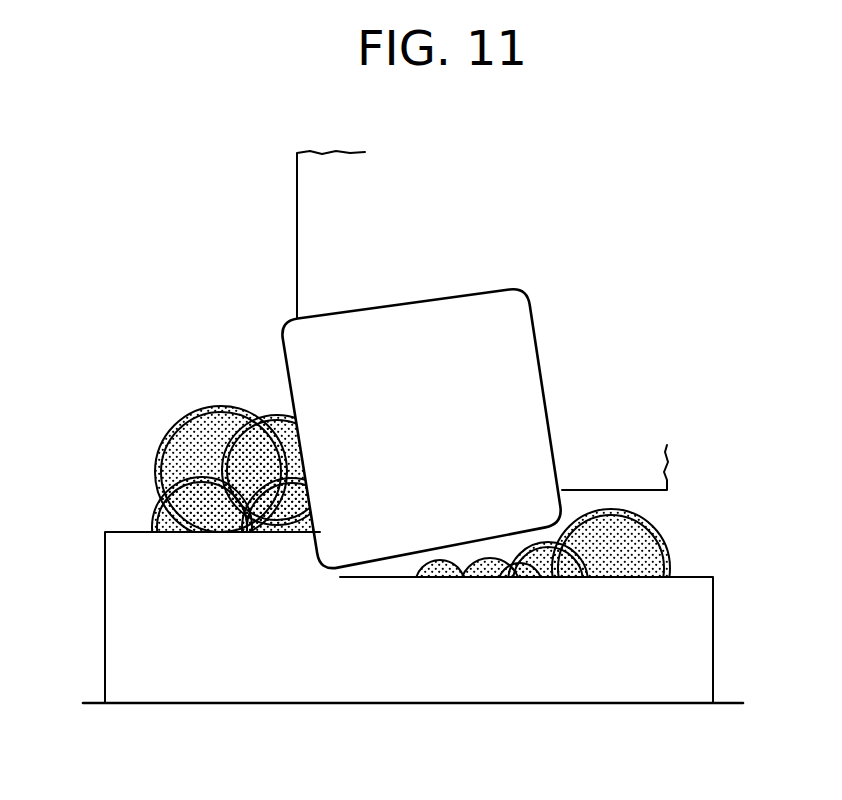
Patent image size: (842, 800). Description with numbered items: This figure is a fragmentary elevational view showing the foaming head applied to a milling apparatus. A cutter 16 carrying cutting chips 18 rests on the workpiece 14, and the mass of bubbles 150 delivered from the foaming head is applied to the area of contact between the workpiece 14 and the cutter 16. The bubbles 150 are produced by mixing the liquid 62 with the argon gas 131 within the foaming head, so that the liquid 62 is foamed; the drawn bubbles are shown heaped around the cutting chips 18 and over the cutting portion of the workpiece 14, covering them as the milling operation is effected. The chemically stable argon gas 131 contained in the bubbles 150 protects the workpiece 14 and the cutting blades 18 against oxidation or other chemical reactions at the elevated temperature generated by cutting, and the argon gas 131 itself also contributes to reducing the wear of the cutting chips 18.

The workpiece 14 is at (228, 688).
The cutter 16 is at (290, 183).
The cutting chip 18 is at (532, 400).
The liquid 62 is at (215, 408).
The argon gas 131 is at (610, 523).
The bubbles 150 is at (158, 450).